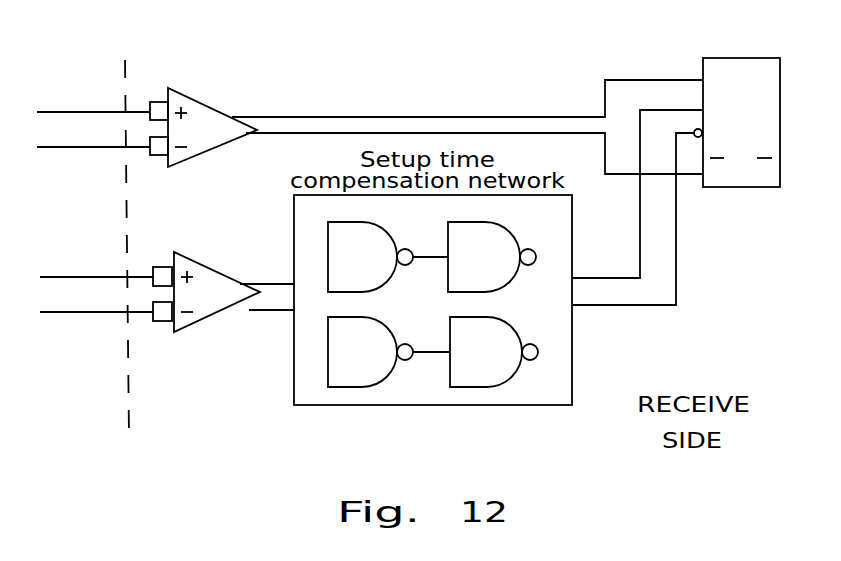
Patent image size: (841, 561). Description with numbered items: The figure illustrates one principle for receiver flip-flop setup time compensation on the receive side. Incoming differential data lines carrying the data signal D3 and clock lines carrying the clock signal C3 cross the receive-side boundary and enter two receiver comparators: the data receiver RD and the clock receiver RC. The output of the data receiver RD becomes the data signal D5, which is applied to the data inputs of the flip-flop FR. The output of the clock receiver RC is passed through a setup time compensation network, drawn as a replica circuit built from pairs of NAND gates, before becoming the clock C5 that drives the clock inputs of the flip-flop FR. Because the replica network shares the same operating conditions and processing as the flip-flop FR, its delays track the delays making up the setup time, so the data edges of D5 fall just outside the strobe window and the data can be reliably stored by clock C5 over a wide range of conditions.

The data signal D3 is at (102, 128).
The clock signal C3 is at (106, 294).
The data receiver RD is at (212, 132).
The clock receiver RC is at (234, 297).
The data signal D5 is at (467, 127).
The clock C5 is at (637, 208).
The flip-flop FR is at (741, 137).